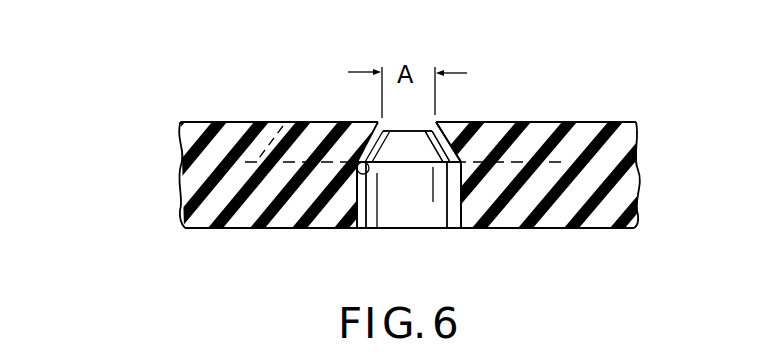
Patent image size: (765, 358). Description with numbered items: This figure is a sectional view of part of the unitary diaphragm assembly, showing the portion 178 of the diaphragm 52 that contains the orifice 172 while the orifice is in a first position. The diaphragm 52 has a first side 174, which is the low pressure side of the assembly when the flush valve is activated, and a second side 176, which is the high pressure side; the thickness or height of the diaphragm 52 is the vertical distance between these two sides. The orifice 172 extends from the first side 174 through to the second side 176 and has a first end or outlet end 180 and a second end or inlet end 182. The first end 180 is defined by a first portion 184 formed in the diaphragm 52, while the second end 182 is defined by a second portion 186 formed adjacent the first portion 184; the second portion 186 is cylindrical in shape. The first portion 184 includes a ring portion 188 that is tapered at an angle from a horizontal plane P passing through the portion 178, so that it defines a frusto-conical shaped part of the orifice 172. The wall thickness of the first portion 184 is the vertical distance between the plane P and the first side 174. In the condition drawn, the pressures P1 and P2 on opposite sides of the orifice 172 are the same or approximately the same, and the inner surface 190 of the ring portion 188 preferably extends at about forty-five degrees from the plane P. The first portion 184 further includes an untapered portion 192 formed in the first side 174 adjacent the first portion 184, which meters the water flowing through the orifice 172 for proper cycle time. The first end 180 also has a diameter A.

The diaphragm 52 is at (587, 228).
The orifice 172 is at (474, 64).
The first side 174 is at (186, 114).
The second side 176 is at (191, 237).
The portion 178 is at (200, 120).
The first end 180 is at (372, 130).
The second end 182 is at (355, 229).
The first portion 184 is at (476, 144).
The second portion 186 is at (474, 212).
The ring portion 188 is at (450, 121).
The inner surface 190 is at (351, 159).
The untapered portion 192 is at (428, 132).
The pressure P1 is at (239, 112).
The horizontal plane P is at (287, 120).
The pressure P2 is at (225, 238).